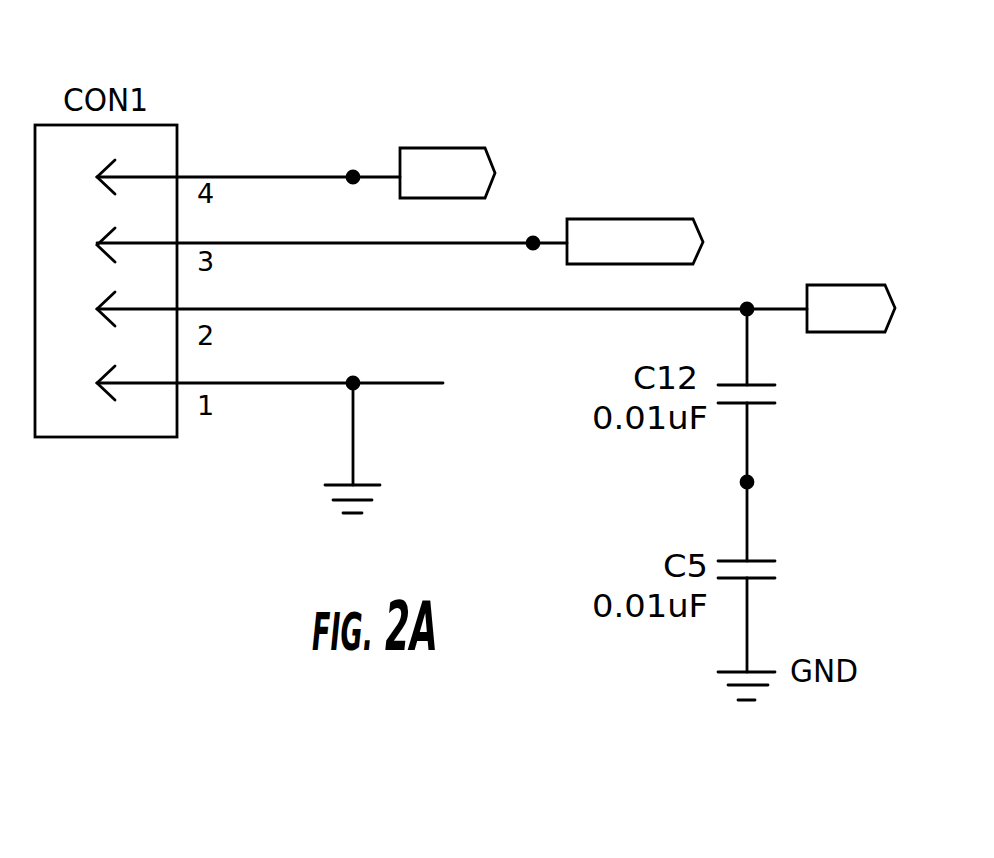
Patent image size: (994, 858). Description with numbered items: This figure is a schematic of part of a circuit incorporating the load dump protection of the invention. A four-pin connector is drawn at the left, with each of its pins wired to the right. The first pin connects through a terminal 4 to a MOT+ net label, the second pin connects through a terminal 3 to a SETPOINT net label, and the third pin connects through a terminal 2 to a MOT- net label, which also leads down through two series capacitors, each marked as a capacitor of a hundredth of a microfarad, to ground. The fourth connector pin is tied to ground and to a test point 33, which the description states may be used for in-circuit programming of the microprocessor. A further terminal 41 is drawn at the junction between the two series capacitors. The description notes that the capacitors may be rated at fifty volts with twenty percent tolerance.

The motor positive terminal (MOT+) 4 is at (353, 177).
The setpoint input terminal 3 is at (533, 243).
The motor negative terminal (MOT-) 2 is at (747, 309).
The test point 33 is at (307, 437).
The capacitor filter node 41 is at (747, 482).